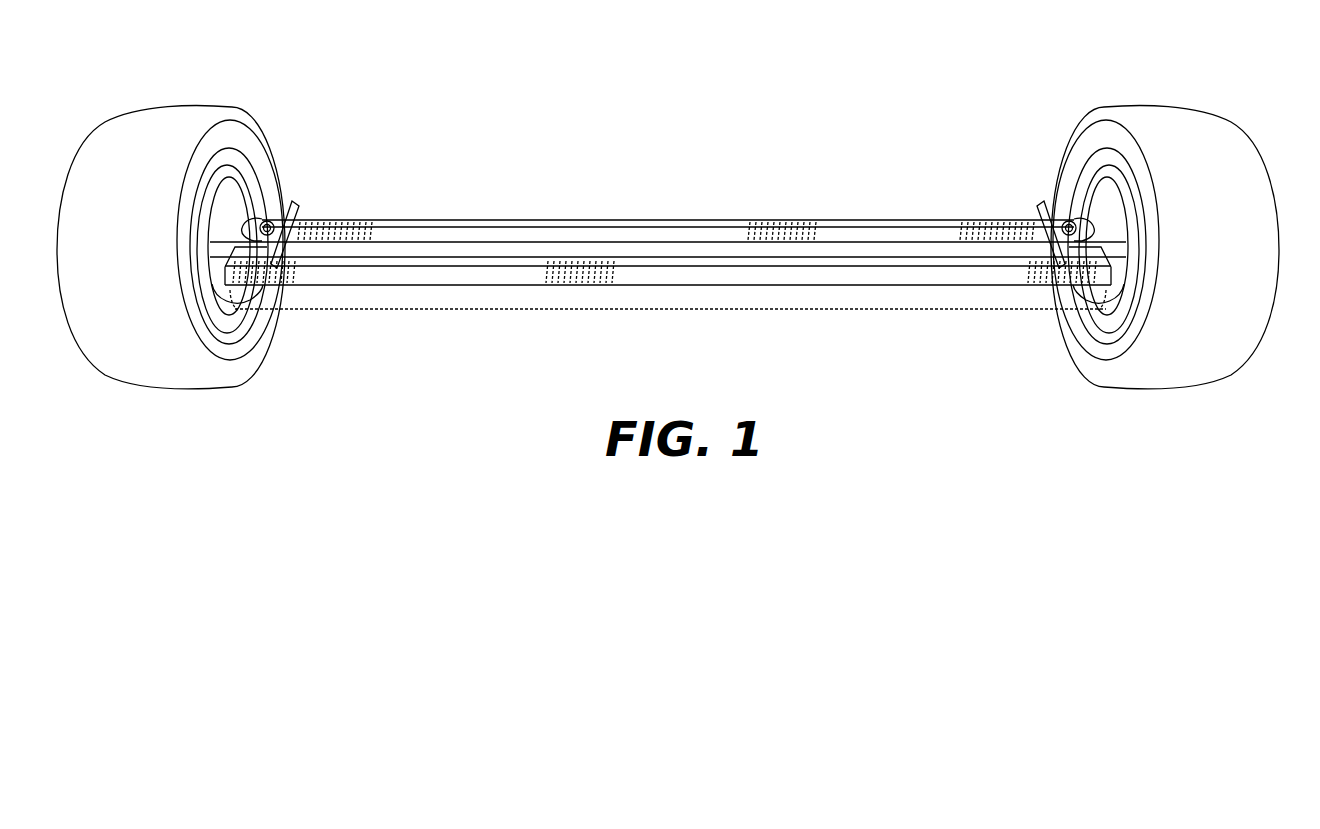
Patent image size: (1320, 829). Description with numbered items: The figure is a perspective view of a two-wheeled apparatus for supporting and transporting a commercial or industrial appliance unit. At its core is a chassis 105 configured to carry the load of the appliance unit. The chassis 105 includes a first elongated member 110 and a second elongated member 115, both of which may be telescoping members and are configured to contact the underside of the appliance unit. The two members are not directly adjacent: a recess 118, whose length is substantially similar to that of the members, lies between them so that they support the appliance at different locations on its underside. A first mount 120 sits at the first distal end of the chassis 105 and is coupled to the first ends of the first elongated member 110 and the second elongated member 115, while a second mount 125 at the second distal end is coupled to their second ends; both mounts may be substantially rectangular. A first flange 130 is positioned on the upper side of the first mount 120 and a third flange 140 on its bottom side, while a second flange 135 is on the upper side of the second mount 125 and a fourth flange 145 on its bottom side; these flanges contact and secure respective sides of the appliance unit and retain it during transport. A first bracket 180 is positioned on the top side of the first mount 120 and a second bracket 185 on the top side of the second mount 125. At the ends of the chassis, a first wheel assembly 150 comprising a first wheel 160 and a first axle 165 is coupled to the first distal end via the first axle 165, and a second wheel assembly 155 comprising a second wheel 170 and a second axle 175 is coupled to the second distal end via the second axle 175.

The chassis 105 is at (668, 248).
The first elongated member 110 is at (649, 220).
The second elongated member 115 is at (728, 257).
The recess 118 is at (449, 240).
The first mount 120 is at (213, 290).
The second mount 125 is at (1123, 290).
The first flange 130 is at (300, 205).
The second flange 135 is at (1036, 205).
The third flange 140 is at (290, 300).
The fourth flange 145 is at (1046, 300).
The first wheel assembly 150 is at (286, 227).
The second wheel assembly 155 is at (1047, 227).
The first wheel 160 is at (170, 107).
The first axle 165 is at (214, 242).
The second wheel 170 is at (1166, 107).
The second axle 175 is at (1122, 242).
The first bracket 180 is at (254, 216).
The second bracket 185 is at (1082, 216).